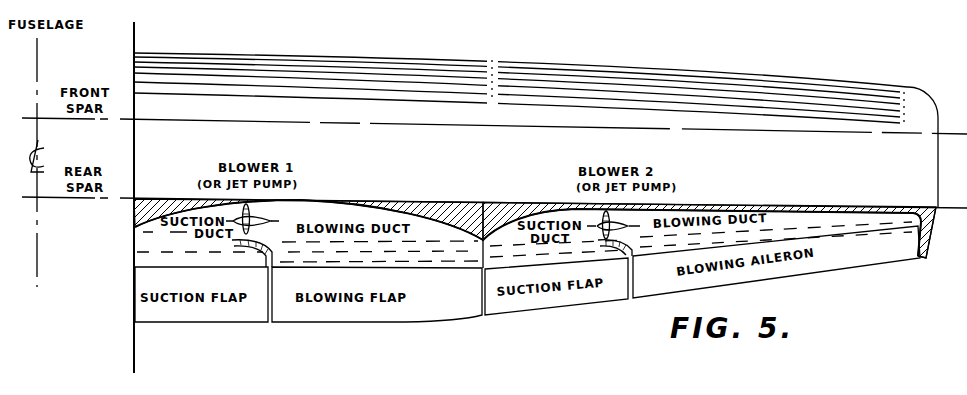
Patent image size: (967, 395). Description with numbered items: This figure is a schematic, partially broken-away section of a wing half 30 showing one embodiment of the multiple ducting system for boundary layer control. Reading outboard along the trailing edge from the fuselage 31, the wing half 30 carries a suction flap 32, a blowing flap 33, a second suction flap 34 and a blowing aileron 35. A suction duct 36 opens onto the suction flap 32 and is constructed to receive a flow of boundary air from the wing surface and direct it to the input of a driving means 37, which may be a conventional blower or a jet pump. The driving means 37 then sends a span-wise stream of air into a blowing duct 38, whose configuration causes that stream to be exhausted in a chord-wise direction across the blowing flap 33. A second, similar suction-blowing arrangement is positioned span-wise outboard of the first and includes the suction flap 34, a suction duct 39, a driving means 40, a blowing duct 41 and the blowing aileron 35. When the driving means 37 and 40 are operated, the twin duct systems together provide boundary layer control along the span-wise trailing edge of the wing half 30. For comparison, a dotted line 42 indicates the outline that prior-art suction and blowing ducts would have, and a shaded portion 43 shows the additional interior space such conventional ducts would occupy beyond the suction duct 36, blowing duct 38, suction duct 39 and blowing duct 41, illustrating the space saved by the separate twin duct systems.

The wing half 30 is at (492, 63).
The fuselage 31 is at (125, 348).
The suction flap 32 is at (233, 314).
The blowing flap 33 is at (371, 315).
The suction flap 34 is at (565, 302).
The blowing aileron 35 is at (793, 278).
The suction duct 36 is at (156, 237).
The driving means 37 is at (278, 197).
The blowing duct 38 is at (425, 227).
The suction duct 39 is at (537, 212).
The driving means 40 is at (632, 202).
The blowing duct 41 is at (813, 216).
The dotted line 42 is at (485, 208).
The shaded portion 43 is at (457, 204).